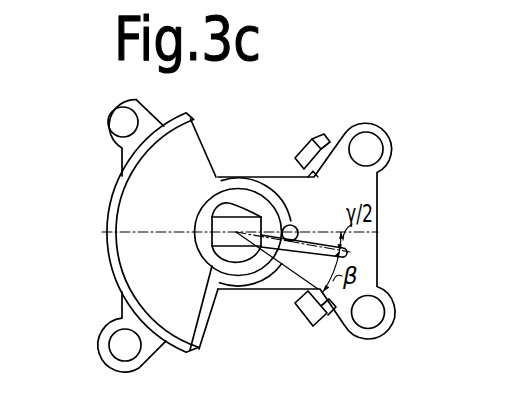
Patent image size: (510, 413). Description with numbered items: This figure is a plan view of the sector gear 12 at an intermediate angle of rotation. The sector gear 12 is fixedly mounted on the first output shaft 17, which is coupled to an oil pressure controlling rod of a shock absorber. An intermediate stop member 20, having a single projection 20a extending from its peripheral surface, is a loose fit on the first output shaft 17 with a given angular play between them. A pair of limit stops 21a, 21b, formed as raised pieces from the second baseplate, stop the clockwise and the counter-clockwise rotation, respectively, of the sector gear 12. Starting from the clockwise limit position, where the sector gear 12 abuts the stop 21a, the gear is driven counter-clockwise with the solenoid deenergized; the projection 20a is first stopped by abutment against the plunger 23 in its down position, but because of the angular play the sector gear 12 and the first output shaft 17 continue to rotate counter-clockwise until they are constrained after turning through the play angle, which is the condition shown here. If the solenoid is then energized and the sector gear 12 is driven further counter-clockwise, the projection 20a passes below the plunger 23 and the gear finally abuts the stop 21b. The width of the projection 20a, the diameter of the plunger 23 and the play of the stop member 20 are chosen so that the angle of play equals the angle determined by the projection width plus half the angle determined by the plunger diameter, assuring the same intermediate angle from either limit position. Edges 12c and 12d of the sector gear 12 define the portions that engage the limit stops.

The sector gear 12 is at (181, 137).
The upper stop edge of base plate 12c is at (212, 159).
The lower stop edge of base plate 12d is at (209, 318).
The first output shaft 17 is at (246, 236).
The intermediate stop member 20 is at (188, 352).
The projection 20a is at (347, 252).
The limit stop 21a is at (323, 133).
The limit stop 21b is at (322, 326).
The plunger 23 is at (296, 225).